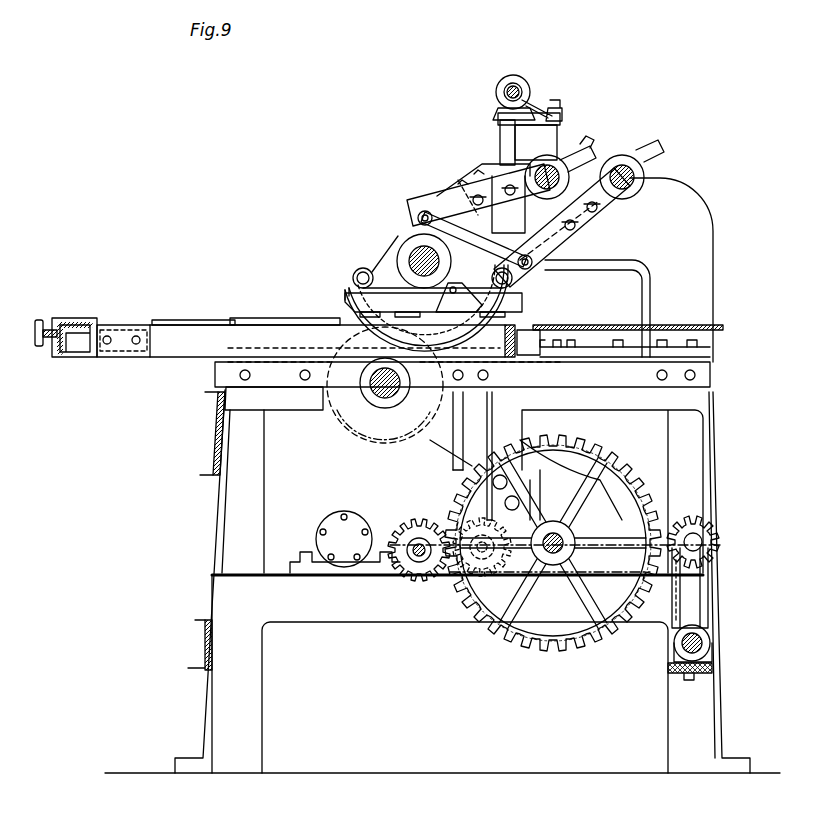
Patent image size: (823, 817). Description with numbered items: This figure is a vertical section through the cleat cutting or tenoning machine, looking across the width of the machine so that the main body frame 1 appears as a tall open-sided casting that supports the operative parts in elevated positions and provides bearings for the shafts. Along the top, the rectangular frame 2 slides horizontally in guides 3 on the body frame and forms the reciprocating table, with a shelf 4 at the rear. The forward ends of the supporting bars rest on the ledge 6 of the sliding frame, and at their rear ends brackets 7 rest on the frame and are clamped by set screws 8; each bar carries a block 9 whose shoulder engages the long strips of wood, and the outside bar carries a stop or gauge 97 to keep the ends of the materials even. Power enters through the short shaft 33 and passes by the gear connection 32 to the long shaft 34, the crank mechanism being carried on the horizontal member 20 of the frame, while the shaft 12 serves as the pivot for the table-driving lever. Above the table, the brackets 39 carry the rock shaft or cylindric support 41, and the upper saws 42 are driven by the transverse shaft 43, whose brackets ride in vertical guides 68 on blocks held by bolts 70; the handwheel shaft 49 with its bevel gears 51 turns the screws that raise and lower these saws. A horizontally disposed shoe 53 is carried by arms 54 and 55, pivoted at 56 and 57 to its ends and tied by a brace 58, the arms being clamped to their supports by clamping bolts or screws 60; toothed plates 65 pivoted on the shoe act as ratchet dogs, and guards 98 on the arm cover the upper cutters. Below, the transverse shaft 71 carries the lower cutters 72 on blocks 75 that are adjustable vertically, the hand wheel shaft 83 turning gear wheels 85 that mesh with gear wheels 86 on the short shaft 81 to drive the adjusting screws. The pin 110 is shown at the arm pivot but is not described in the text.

The main body frame 1 is at (212, 582).
The rectangular frame 2 is at (78, 352).
The guides 3 is at (670, 352).
The shelf 4 is at (716, 324).
The ledge 6 is at (512, 357).
The brackets 7 is at (122, 325).
The set screws 8 is at (42, 320).
The block 9 is at (178, 322).
The shaft 12 is at (702, 643).
The horizontal member 20 is at (700, 678).
The gear connection 32 is at (690, 565).
The short shaft 33 is at (700, 538).
The long shaft 34 is at (553, 555).
The brackets 39 is at (712, 226).
The rock shaft or cylindric support 41 is at (558, 168).
The upper saws 42 is at (378, 220).
The transverse shaft 43 is at (442, 261).
The handwheel shaft 49 is at (502, 90).
The bevel gears 51 is at (526, 82).
The shoe 53 is at (350, 304).
The arm 54 is at (450, 200).
The arm 55 is at (565, 248).
The pivot 56 is at (350, 274).
The pivot 57 is at (515, 286).
The brace 58 is at (497, 250).
The clamping bolts or screws 60 is at (640, 146).
The plates 65 is at (458, 312).
The vertical guides 68 is at (500, 134).
The bolts 70 is at (440, 452).
The transverse shaft 71 is at (384, 398).
The cutters 72 is at (364, 437).
The blocks 75 is at (482, 433).
The short shaft 81 is at (488, 575).
The hand wheel shaft 83 is at (416, 562).
The gear wheels 85 is at (412, 520).
The gear wheels 86 is at (486, 562).
The stop or gauge 97 is at (266, 318).
The guards 98 is at (395, 195).
The pivot pin 110 is at (644, 175).